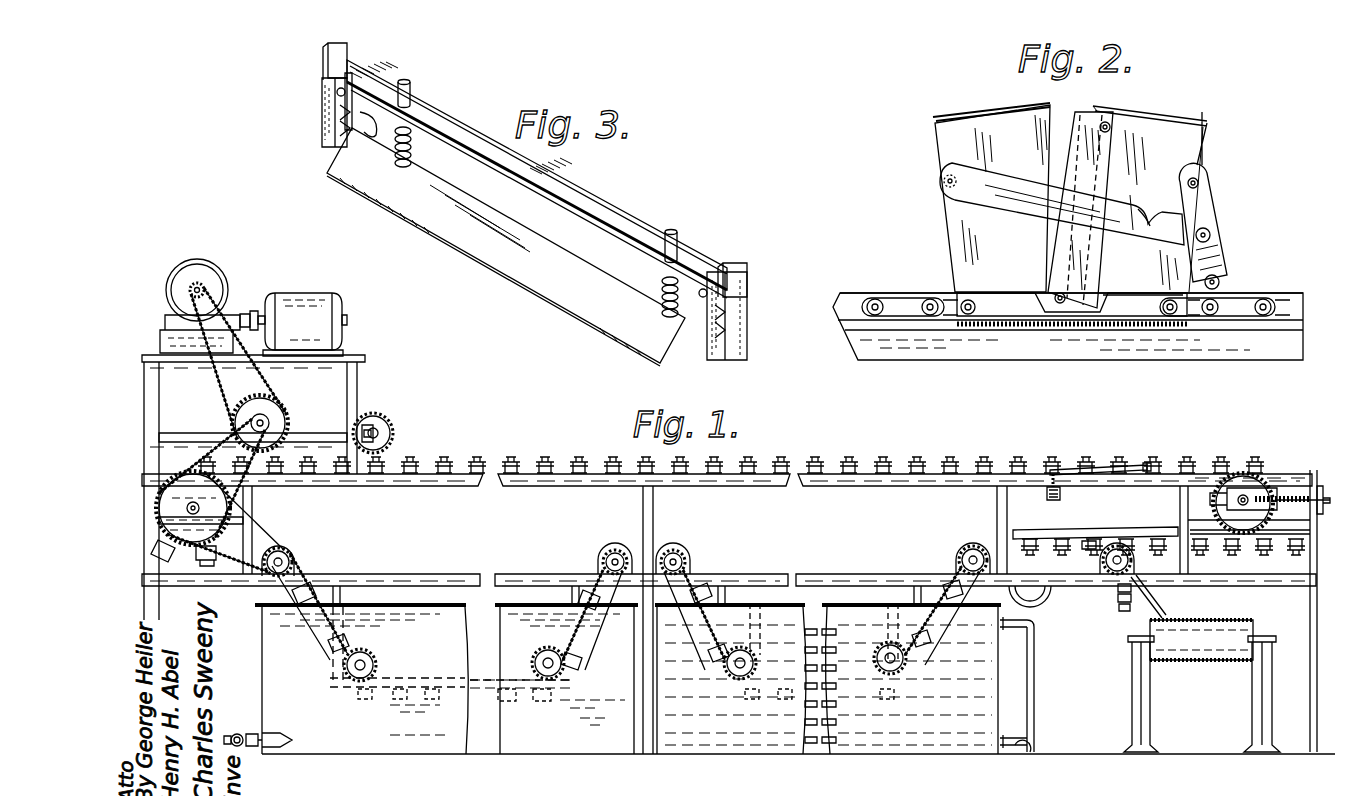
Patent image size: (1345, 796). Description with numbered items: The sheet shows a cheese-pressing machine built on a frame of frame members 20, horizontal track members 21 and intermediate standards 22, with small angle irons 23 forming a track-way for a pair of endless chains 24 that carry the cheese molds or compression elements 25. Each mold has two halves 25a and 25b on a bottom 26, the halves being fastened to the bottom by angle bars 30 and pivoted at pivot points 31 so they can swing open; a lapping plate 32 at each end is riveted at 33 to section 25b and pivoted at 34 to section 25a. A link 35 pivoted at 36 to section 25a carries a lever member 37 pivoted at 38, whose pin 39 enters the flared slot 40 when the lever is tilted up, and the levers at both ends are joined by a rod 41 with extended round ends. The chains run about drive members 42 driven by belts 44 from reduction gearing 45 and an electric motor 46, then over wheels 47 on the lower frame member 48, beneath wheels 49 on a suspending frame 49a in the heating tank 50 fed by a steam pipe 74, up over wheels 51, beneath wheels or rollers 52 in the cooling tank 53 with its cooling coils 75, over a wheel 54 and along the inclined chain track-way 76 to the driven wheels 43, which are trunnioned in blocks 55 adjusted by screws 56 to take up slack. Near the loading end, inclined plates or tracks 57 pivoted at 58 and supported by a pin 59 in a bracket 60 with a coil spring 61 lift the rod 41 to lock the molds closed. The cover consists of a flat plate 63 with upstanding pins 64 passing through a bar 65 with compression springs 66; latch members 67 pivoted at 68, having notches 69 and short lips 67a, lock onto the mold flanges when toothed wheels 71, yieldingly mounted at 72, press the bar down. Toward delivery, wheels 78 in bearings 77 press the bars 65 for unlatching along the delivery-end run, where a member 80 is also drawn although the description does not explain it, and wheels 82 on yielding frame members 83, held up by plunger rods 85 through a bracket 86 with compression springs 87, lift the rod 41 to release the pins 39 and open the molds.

In FIG. 1, the frame members 20 is at (144, 546).
In FIG. 1, the track members 21 is at (478, 488).
In FIG. 2, the track members 21 is at (848, 290).
In FIG. 1, the intermediate supporting standards 22 is at (655, 512).
In FIG. 2, the small angle irons 23 is at (860, 350).
In FIG. 1, the endless element or chain 24 is at (300, 560).
In FIG. 2, the endless element or chain 24 is at (880, 298).
In FIG. 1, the cheese mold or compression element 25 is at (472, 460).
In FIG. 2, the cheese mold or compression element 25 is at (1065, 189).
In FIG. 2, the mold section or half 25a is at (962, 150).
In FIG. 2, the mold section or half 25b is at (1200, 133).
In FIG. 2, the bottom 26 is at (1046, 330).
In FIG. 2, the angle bars 30 is at (1015, 318).
In FIG. 2, the pivot points 31 is at (968, 315).
In FIG. 2, the lapping plate 32 is at (1080, 110).
In FIG. 2, the rivet 33 is at (1108, 125).
In FIG. 2, the pivot 34 is at (1062, 304).
In FIG. 2, the link 35 is at (962, 200).
In FIG. 2, the pivot 36 is at (944, 183).
In FIG. 2, the lever member 37 is at (1220, 200).
In FIG. 2, the pivot 38 is at (1210, 233).
In FIG. 2, the pin 39 is at (1199, 182).
In FIG. 2, the flared slot 40 is at (1148, 222).
In FIG. 2, the connecting bar or rod 41 is at (1219, 279).
In FIG. 1, the drive member 42 is at (232, 505).
In FIG. 1, the driven element 43 is at (1216, 480).
In FIG. 1, the belts 44 is at (207, 452).
In FIG. 1, the reduction gearing 45 is at (221, 273).
In FIG. 1, the electric motor 46 is at (272, 293).
In FIG. 1, the wheels 47 is at (283, 549).
In FIG. 1, the lower frame member 48 is at (473, 574).
In FIG. 1, the wheels 49 is at (372, 656).
In FIG. 1, the suspending frame 49a is at (362, 596).
In FIG. 1, the tank or receptacle 50 is at (262, 668).
In FIG. 1, the wheels 51 is at (633, 548).
In FIG. 1, the wheels or rollers 52 is at (755, 630).
In FIG. 1, the second tank or receptacle 53 is at (1000, 712).
In FIG. 1, the wheel 54 is at (962, 553).
In FIG. 1, the blocks 55 is at (1256, 486).
In FIG. 1, the adjusting screws 56 is at (1320, 486).
In FIG. 1, the inclined plates or tracks 57 is at (1068, 468).
In FIG. 1, the pivot point 58 is at (1147, 463).
In FIG. 1, the pin 59 is at (1053, 501).
In FIG. 1, the bracket 60 is at (1047, 500).
In FIG. 1, the coil spring 61 is at (1049, 487).
In FIG. 3, the flat plate 63 is at (420, 229).
In FIG. 3, the upstanding pins 64 is at (412, 87).
In FIG. 3, the bar 65 is at (440, 114).
In FIG. 3, the compression springs 66 is at (412, 160).
In FIG. 3, the latch members 67 is at (322, 110).
In FIG. 3, the short ends or lips 67a is at (348, 46).
In FIG. 3, the pivot 68 is at (336, 91).
In FIG. 3, the notches 69 is at (340, 130).
In FIG. 1, the toothed wheels 71 is at (384, 423).
In FIG. 1, the yielding mounting 72 is at (370, 425).
In FIG. 1, the steam pipe 74 is at (250, 730).
In FIG. 1, the cooling coils 75 is at (660, 700).
In FIG. 1, the chain track-way 76 is at (1120, 546).
In FIG. 1, the bearings 77 is at (1036, 606).
In FIG. 1, the wheels 78 is at (1050, 602).
In FIG. 1, the discharge bar 80 is at (1013, 533).
In FIG. 1, the wheels 82 is at (1140, 580).
In FIG. 1, the yielding frame members 83 is at (1089, 540).
In FIG. 1, the plunger rods or pins 85 is at (1123, 612).
In FIG. 1, the bracket 86 is at (1120, 603).
In FIG. 1, the compression spring 87 is at (1118, 590).